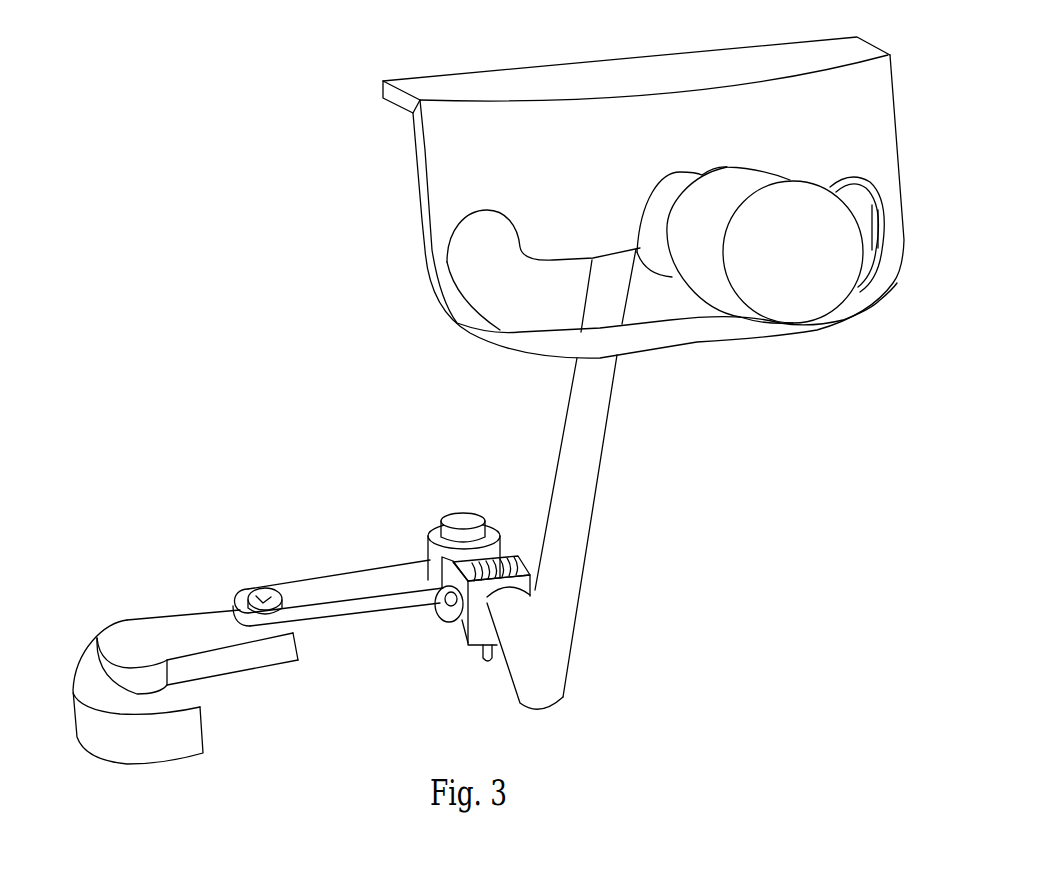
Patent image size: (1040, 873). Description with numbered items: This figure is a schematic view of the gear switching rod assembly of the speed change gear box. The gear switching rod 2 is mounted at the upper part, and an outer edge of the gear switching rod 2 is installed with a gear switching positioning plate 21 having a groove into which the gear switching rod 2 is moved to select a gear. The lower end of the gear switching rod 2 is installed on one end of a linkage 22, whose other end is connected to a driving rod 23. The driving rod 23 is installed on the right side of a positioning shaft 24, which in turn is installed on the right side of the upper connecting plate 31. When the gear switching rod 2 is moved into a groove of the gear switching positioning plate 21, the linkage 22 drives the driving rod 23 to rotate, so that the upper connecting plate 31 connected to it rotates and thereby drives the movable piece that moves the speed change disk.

The gear switching rod 2 is at (780, 273).
The gear switching positioning plate 21 is at (850, 115).
The linkage 22 is at (578, 448).
The driving rod 23 is at (407, 580).
The positioning shaft 24 is at (270, 592).
The upper connecting plate 31 is at (200, 630).